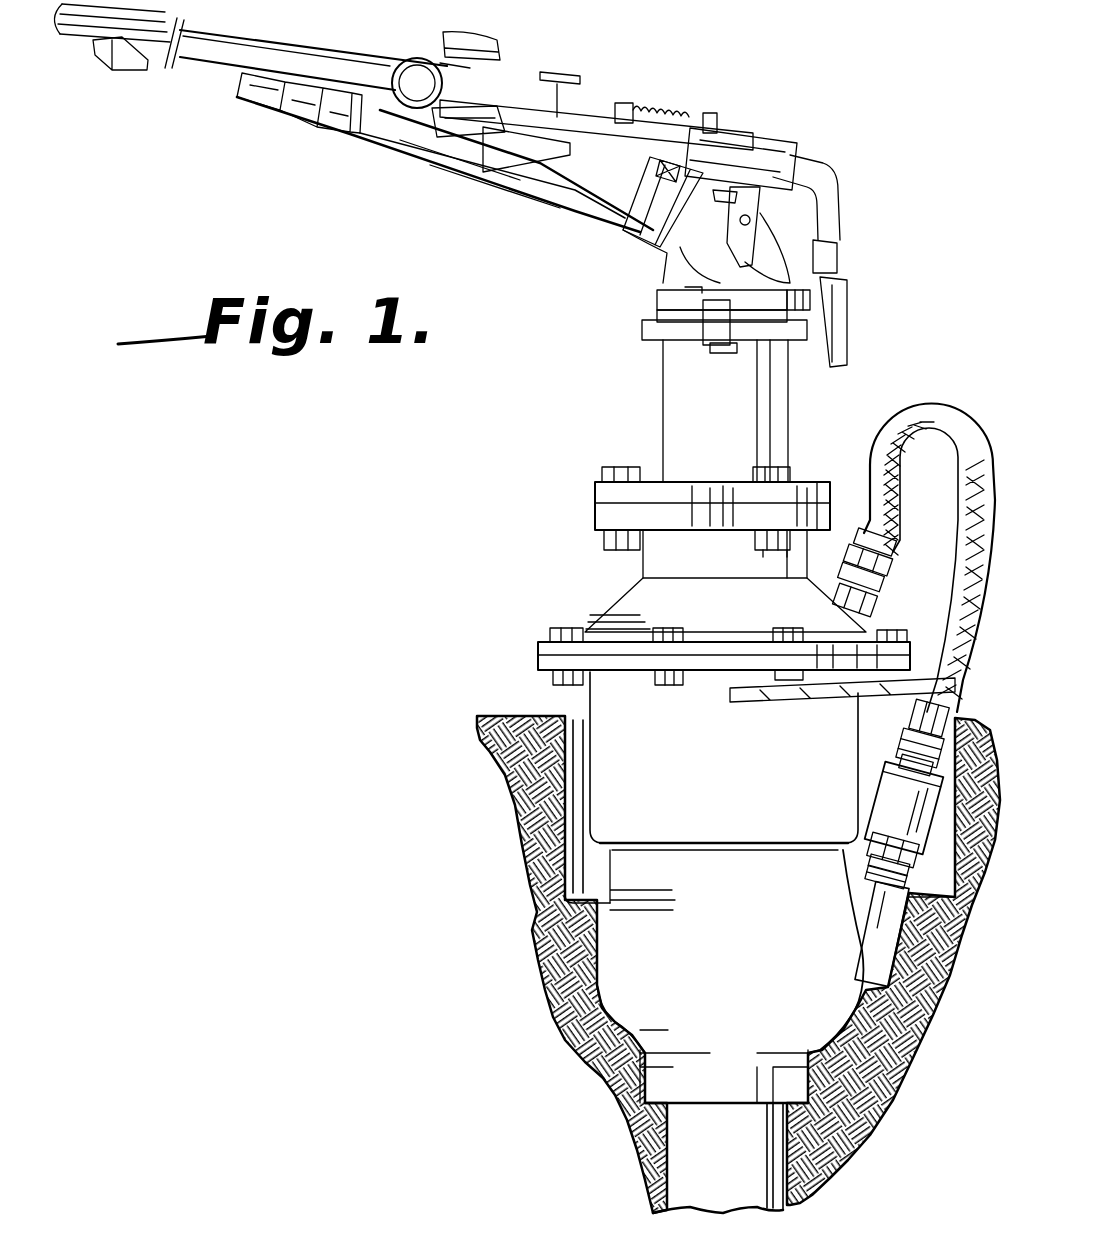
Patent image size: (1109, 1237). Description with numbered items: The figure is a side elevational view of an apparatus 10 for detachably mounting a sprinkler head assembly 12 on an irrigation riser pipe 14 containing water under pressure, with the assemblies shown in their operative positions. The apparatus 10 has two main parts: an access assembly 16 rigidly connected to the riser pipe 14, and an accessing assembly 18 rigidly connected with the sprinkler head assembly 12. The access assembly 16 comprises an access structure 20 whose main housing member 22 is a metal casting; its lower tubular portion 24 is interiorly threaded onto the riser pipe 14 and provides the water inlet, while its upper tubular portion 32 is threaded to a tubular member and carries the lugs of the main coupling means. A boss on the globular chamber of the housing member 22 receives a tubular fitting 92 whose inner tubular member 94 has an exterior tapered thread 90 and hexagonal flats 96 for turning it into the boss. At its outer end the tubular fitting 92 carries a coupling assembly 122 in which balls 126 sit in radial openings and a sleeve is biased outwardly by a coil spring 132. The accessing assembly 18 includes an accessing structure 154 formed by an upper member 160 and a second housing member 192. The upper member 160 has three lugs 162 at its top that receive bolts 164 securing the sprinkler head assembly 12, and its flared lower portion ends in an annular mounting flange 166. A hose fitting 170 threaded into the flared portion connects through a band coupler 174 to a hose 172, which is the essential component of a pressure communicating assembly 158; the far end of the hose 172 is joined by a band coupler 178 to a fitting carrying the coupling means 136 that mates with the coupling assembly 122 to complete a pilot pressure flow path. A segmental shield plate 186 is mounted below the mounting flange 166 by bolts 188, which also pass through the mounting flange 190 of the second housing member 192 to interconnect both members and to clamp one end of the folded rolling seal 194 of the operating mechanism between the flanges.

The apparatus 10 is at (506, 600).
The sprinkler head assembly 12 is at (606, 82).
The riser pipe 14 is at (690, 1177).
The access assembly 16 is at (598, 1026).
The accessing assembly 18 is at (613, 602).
The access structure 20 is at (587, 953).
The main housing member 22 is at (607, 992).
The lower tubular portion 24 is at (668, 1085).
The upper tubular portion 32 is at (766, 848).
The exterior tapered thread 90 is at (862, 872).
The tubular fitting 92 is at (878, 880).
The inner tubular member 94 is at (870, 826).
The hexagonal flats 96 is at (862, 855).
The coupling assembly 122 is at (880, 784).
The ball 126 is at (888, 803).
The coil spring 132 is at (895, 771).
The coupling means 136 is at (899, 753).
The accessing structure 154 is at (590, 703).
The pressure communicating assembly 158 is at (917, 404).
The upper member 160 is at (600, 618).
The lugs 162 is at (603, 512).
The bolts 164 is at (768, 468).
The annular mounting flange 166 is at (545, 651).
The hose fitting 170 is at (862, 599).
The hose 172 is at (970, 494).
The band coupler 174 is at (890, 568).
The band coupler 178 is at (922, 730).
The shield plate 186 is at (772, 692).
The bolts 188 is at (790, 636).
The mounting flange 190 is at (615, 672).
The second housing member 192 is at (756, 850).
The folded rolling seal 194 is at (540, 660).